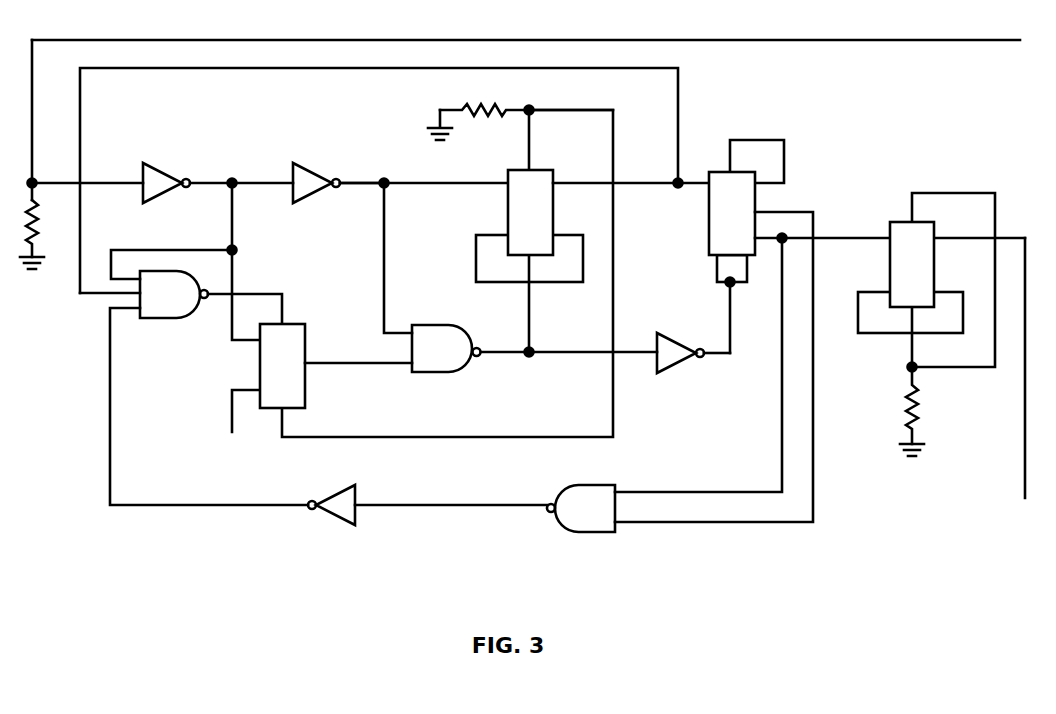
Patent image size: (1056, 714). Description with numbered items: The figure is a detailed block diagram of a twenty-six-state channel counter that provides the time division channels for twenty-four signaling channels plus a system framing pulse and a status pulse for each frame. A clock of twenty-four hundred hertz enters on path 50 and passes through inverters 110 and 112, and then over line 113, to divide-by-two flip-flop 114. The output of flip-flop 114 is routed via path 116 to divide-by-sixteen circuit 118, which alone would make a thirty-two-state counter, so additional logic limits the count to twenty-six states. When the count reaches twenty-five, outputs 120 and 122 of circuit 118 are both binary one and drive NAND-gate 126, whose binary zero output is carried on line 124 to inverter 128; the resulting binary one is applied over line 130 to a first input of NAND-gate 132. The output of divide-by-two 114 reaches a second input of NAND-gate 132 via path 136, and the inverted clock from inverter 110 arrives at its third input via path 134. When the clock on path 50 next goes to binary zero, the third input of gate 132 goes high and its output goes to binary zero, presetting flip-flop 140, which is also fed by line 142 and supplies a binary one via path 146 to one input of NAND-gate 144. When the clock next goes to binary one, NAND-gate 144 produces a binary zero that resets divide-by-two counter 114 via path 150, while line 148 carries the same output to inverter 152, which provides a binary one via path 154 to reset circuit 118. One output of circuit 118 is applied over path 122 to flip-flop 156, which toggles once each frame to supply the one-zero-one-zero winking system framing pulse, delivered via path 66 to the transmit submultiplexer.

The path 50 is at (1020, 40).
The path 66 is at (1024, 492).
The inverter 110 is at (162, 164).
The inverter 112 is at (310, 164).
The line 113 is at (448, 185).
The divide-by-two flip-flop 114 is at (553, 171).
The path 116 is at (645, 185).
The divide-by-16 circuit 118 is at (708, 247).
The output 120 is at (813, 211).
The output 122 is at (845, 237).
The line 124 is at (455, 506).
The NAND-gate 126 is at (593, 533).
The inverter 128 is at (335, 526).
The line 130 is at (210, 506).
The NAND-gate 132 is at (165, 319).
The path 134 is at (185, 250).
The path 136 is at (228, 68).
The flip-flop 140 is at (306, 326).
The line 142 is at (384, 258).
The NAND-gate 144 is at (445, 373).
The path 146 is at (345, 364).
The line 148 is at (561, 354).
The path 150 is at (531, 313).
The inverter 152 is at (680, 374).
The path 154 is at (728, 290).
The flip-flop 156 is at (889, 263).